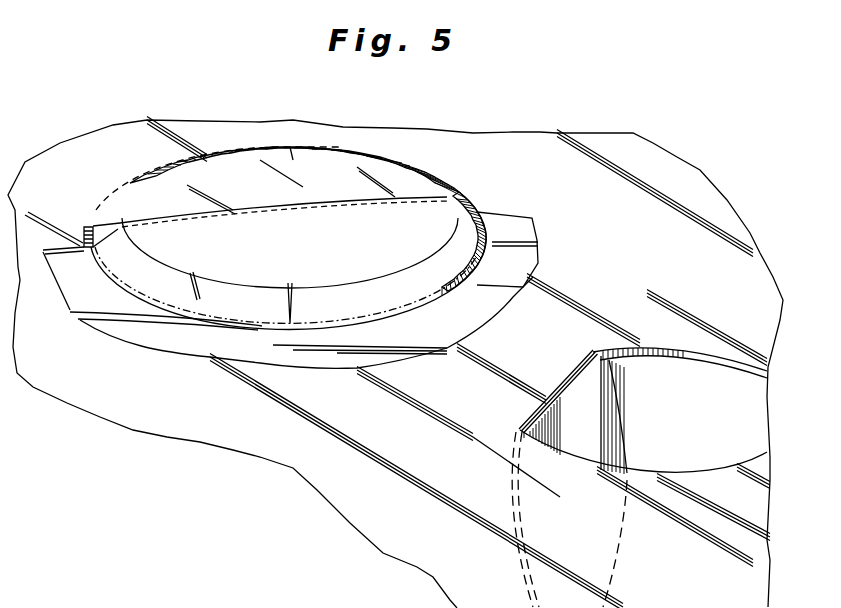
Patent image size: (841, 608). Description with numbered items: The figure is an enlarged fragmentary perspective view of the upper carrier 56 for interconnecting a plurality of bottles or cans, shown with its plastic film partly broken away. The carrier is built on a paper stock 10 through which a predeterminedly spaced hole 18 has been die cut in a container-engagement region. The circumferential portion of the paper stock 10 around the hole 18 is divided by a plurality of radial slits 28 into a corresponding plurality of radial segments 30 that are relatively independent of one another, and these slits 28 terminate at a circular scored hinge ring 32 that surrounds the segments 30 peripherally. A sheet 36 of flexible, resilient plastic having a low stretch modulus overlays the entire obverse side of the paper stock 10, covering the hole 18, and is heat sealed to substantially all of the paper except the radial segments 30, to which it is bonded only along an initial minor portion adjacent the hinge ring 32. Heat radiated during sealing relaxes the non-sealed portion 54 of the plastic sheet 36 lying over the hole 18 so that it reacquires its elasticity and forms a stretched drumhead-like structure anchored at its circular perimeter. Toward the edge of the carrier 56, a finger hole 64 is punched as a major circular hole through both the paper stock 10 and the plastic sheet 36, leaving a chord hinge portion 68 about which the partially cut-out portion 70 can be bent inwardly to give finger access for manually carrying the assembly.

The paper stock 10 is at (747, 368).
The hole 18 is at (320, 251).
The radial slit 28 is at (122, 230).
The radial segment 30 is at (205, 270).
The hinge ring 32 is at (430, 303).
The plastic sheet 36 is at (673, 342).
The non-sealed portion of the plastic sheet 54 is at (355, 206).
The upper carrier 56 is at (672, 160).
The finger hole 64 is at (723, 456).
The chord hinge portion 68 is at (583, 362).
The partially cut-out portion 70 is at (626, 412).